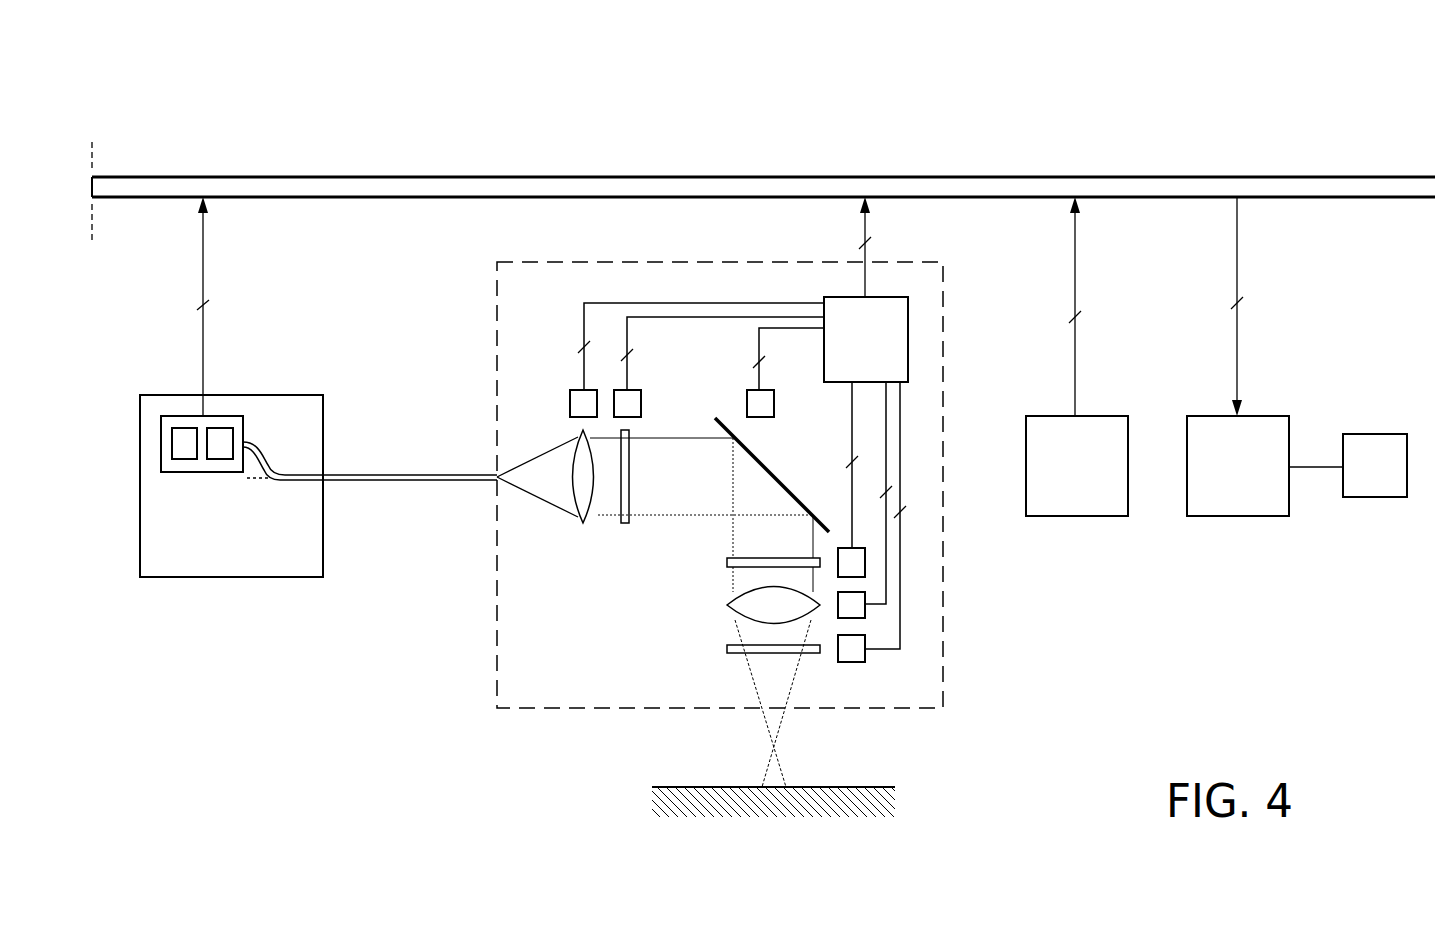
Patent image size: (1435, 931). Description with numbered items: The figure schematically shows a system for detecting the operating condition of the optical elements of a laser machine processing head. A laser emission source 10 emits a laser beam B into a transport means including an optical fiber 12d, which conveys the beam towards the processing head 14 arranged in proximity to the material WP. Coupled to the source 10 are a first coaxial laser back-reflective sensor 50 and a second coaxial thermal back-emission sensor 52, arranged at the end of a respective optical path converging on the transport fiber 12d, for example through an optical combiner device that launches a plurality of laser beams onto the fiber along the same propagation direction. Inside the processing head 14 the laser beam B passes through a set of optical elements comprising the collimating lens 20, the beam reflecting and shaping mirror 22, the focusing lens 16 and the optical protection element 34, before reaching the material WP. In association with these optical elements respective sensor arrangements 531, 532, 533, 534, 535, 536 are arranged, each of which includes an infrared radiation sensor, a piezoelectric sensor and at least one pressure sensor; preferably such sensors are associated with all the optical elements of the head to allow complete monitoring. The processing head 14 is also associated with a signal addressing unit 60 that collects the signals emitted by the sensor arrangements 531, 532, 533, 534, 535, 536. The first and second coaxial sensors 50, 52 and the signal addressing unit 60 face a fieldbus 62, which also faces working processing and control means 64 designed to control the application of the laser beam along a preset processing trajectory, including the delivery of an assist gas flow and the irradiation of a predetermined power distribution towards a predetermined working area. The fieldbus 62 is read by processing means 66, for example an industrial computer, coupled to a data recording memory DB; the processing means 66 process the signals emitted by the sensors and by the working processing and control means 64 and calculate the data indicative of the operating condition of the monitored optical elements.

The laser emission source 10 is at (230, 570).
The optical fiber 12d is at (427, 482).
The processing head 14 is at (512, 672).
The focusing lens 16 is at (712, 610).
The collimating lens 20 is at (560, 433).
The beam reflecting and shaping mirror 22 is at (810, 492).
The optical protection element 34 is at (727, 650).
The first coaxial laser back-reflective sensor 50 is at (183, 420).
The second coaxial thermal back-emission sensor 52 is at (222, 420).
The sensor arrangement 531 is at (568, 404).
The sensor arrangement 532 is at (613, 388).
The sensor arrangement 533 is at (747, 400).
The sensor arrangement 534 is at (865, 560).
The sensor arrangement 535 is at (865, 612).
The sensor arrangement 536 is at (865, 656).
The signal addressing unit 60 is at (908, 347).
The fieldbus 62 is at (418, 190).
The working processing and control means 64 is at (1065, 516).
The processing means 66 is at (1232, 516).
The laser beam B is at (660, 505).
The data recording memory DB is at (1358, 497).
The material WP is at (870, 775).